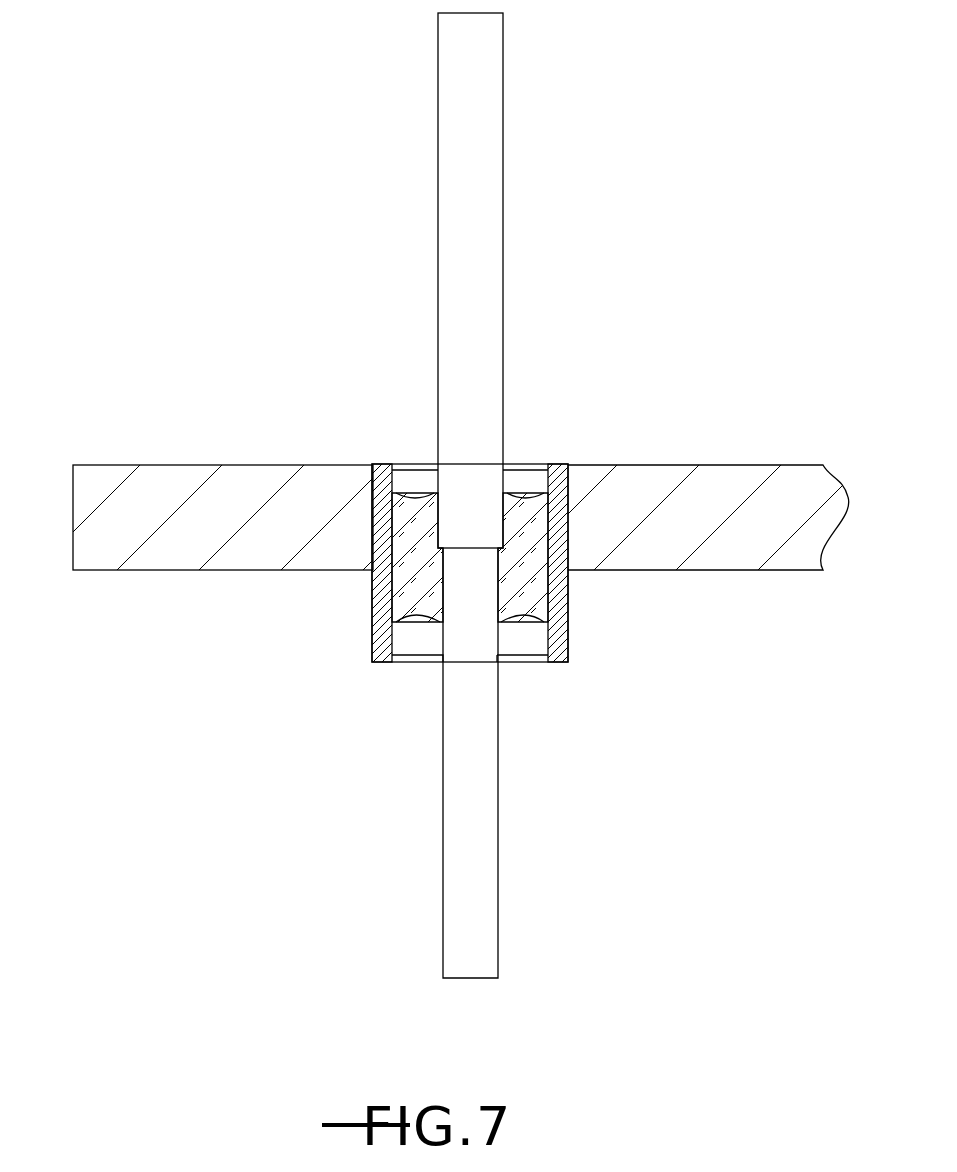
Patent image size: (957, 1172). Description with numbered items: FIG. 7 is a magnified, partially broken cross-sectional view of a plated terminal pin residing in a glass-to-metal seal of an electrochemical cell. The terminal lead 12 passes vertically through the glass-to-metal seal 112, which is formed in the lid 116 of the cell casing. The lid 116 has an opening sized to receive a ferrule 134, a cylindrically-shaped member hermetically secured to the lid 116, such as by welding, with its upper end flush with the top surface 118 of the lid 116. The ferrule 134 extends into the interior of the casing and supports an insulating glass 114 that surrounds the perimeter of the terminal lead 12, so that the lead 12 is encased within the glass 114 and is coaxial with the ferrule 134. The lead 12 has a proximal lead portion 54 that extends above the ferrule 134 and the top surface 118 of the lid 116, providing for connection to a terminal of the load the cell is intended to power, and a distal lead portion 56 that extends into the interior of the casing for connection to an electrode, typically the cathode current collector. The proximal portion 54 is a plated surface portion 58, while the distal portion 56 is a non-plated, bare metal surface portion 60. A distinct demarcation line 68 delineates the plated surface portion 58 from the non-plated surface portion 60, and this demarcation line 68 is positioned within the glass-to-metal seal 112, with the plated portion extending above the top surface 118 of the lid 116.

The terminal lead 12 is at (457, 495).
The proximal lead portion 54 is at (505, 315).
The distal lead portion 56 is at (472, 903).
The plated surface portion 58 is at (457, 265).
The non-plated surface portion 60 is at (472, 827).
The demarcation line 68 is at (480, 552).
The glass-to-metal seal 112 is at (433, 540).
The glass 114 is at (415, 512).
The lid 116 is at (449, 479).
The top surface 118 is at (230, 465).
The ferrule 134 is at (373, 620).